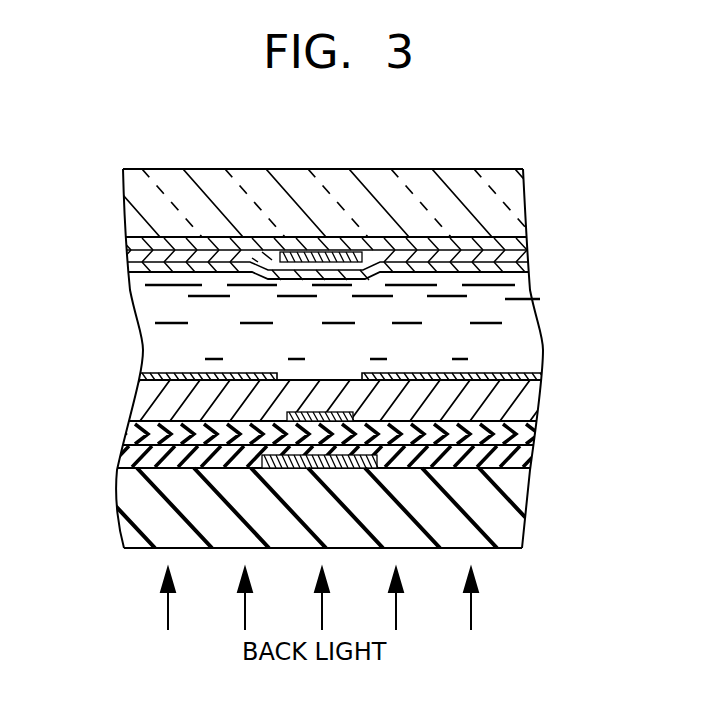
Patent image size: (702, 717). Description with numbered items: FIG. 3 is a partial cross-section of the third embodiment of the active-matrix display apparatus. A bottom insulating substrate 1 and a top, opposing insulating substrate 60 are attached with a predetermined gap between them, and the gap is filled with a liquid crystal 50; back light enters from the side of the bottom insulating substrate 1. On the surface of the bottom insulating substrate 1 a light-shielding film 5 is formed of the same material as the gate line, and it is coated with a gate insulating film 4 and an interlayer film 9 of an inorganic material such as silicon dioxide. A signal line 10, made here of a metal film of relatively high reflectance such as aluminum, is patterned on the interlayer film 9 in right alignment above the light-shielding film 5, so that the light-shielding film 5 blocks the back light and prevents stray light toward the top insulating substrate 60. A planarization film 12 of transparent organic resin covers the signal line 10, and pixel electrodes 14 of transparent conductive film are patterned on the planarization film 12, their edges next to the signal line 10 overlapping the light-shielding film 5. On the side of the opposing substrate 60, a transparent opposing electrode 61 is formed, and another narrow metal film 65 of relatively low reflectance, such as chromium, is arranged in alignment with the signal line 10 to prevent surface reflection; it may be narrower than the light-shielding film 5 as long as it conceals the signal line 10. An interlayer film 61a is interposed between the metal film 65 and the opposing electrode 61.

The bottom insulating substrate 1 is at (505, 523).
The gate insulating film 4 is at (510, 455).
The light-shielding film 5 is at (288, 468).
The interlayer film 9 is at (513, 430).
The signal line 10 is at (322, 412).
The planarization film 12 is at (503, 400).
The pixel electrode 14 is at (184, 372).
The liquid crystal 50 is at (500, 302).
The top insulating substrate 60 is at (500, 195).
The opposing electrode 61 is at (527, 270).
The interlayer film 61a is at (318, 271).
The metal film 65 is at (326, 253).